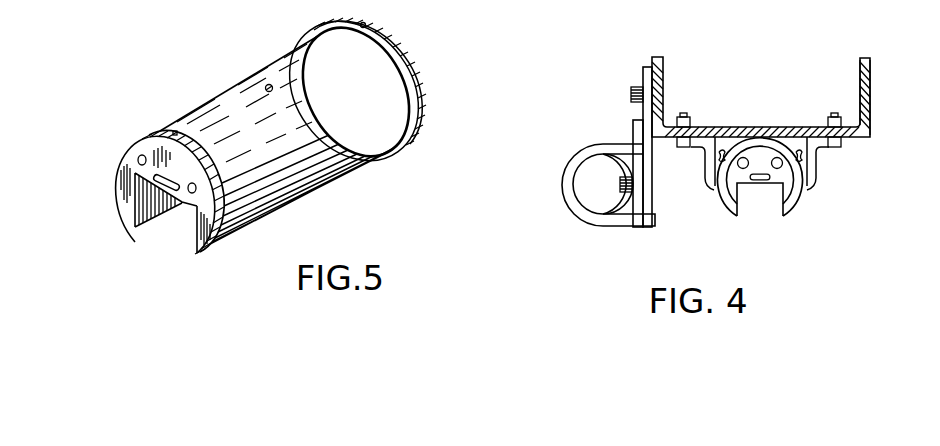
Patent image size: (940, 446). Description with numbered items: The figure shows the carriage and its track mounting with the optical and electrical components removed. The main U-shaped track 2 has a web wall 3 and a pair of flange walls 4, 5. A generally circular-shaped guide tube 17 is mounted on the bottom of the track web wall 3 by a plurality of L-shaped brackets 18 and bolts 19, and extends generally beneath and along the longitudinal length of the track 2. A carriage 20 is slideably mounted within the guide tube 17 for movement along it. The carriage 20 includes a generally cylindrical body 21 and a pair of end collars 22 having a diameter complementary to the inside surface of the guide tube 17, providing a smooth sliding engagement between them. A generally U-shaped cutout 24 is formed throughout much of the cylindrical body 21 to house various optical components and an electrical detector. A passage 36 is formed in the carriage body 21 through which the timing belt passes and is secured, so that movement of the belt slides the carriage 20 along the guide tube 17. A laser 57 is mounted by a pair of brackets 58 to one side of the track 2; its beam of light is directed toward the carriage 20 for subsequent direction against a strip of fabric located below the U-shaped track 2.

In FIG. 4, the track 2 is at (876, 77).
In FIG. 4, the web wall 3 is at (739, 126).
In FIG. 4, the flange wall 4 is at (871, 103).
In FIG. 4, the flange wall 5 is at (665, 84).
In FIG. 4, the guide tube 17 is at (797, 210).
In FIG. 4, the L-shaped brackets 18 is at (711, 163).
In FIG. 4, the bolts 19 is at (834, 117).
In FIG. 5, the carriage 20 is at (226, 82).
In FIG. 4, the carriage 20 is at (764, 160).
In FIG. 5, the cylindrical body 21 is at (305, 162).
In FIG. 5, the end collars 22 is at (405, 63).
In FIG. 4, the end collars 22 is at (790, 190).
In FIG. 5, the U-shaped cutout 24 is at (143, 205).
In FIG. 4, the U-shaped cutout 24 is at (742, 205).
In FIG. 5, the passage 36 is at (170, 174).
In FIG. 4, the passage 36 is at (757, 182).
In FIG. 4, the laser 57 is at (595, 200).
In FIG. 4, the brackets 58 is at (563, 192).